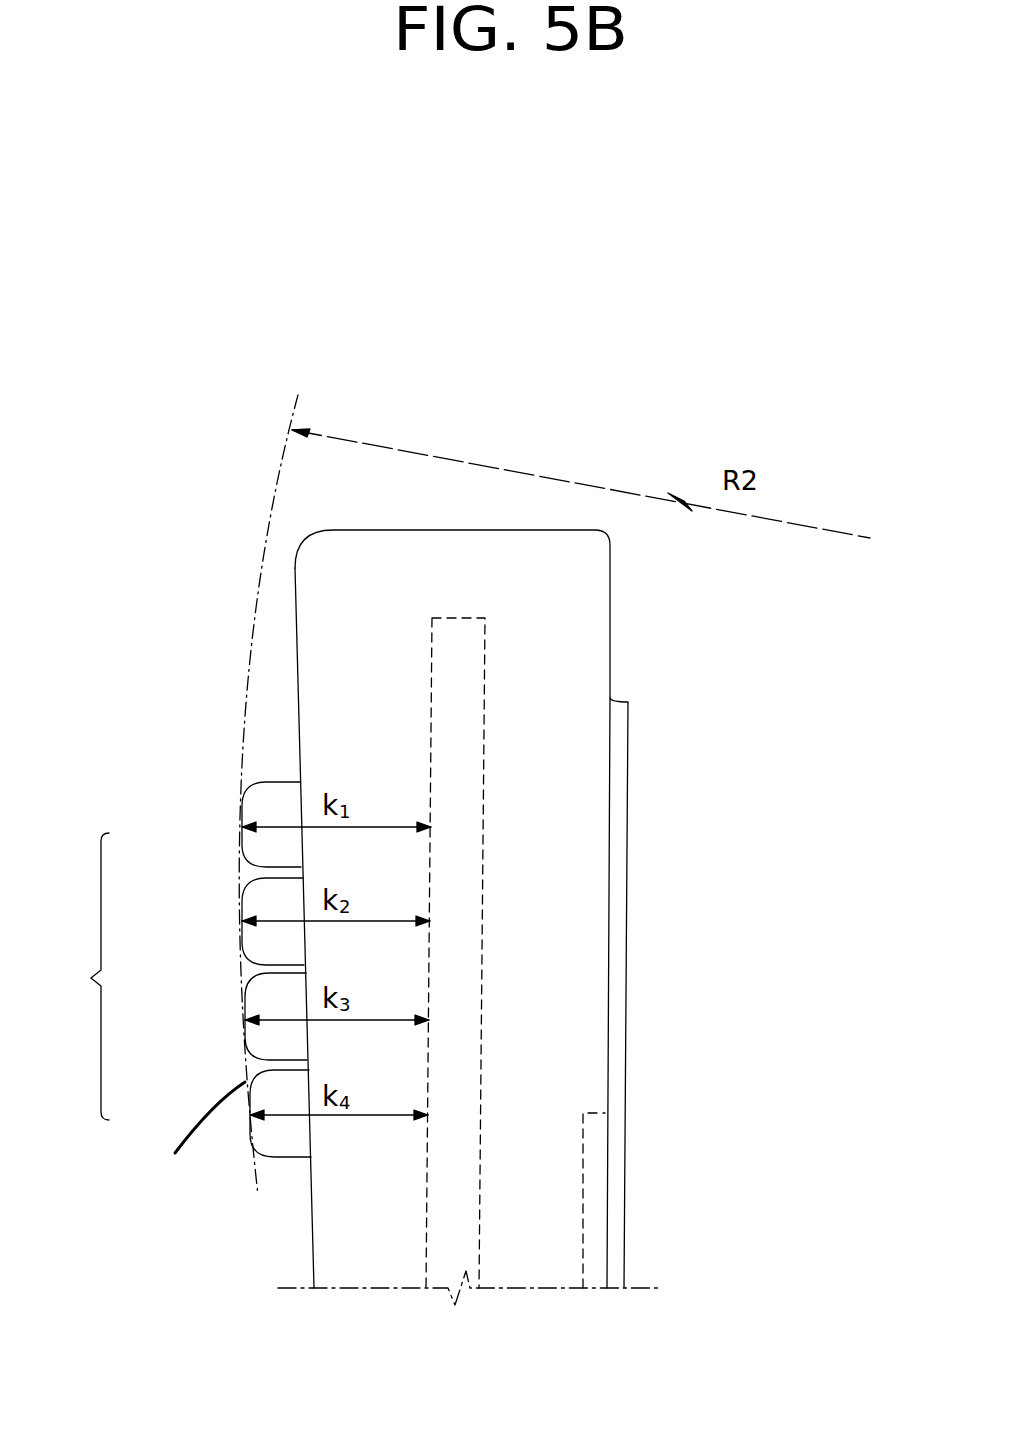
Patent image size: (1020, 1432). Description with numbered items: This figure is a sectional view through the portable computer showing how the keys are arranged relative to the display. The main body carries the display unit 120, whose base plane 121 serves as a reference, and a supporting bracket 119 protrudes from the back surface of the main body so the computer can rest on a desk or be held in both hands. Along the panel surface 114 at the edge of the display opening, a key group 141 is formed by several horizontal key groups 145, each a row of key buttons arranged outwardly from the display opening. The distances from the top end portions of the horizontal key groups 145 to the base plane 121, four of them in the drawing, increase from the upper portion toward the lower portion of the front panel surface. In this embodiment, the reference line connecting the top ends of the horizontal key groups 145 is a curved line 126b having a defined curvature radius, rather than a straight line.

The left panel surface 114 is at (294, 633).
The supporting bracket 119 is at (628, 710).
The display unit 120 is at (456, 888).
The base plane 121 is at (430, 800).
The right key group 141 is at (75, 976).
The horizontal key groups 145 is at (242, 834).
The curved line 126b is at (194, 1141).